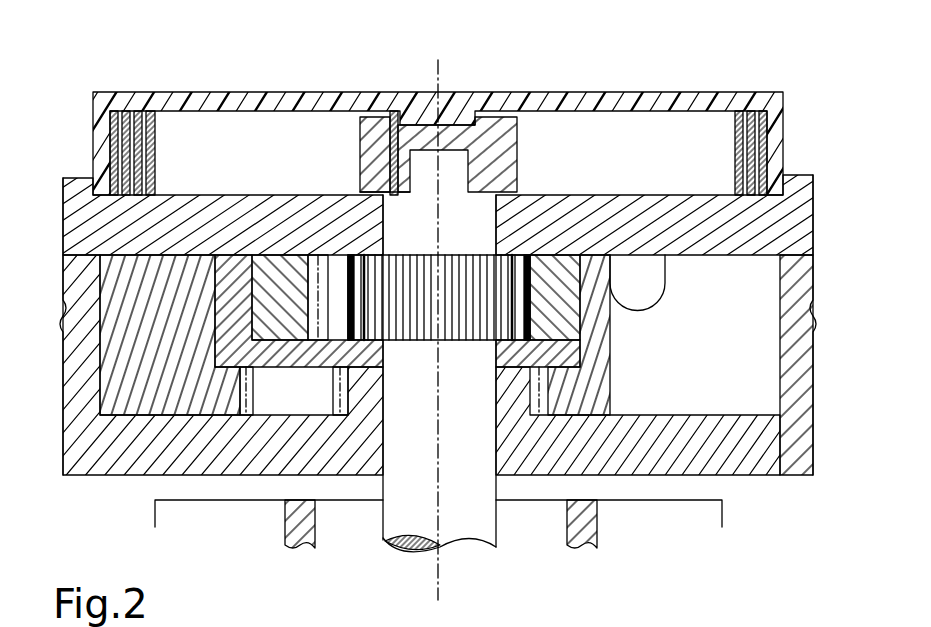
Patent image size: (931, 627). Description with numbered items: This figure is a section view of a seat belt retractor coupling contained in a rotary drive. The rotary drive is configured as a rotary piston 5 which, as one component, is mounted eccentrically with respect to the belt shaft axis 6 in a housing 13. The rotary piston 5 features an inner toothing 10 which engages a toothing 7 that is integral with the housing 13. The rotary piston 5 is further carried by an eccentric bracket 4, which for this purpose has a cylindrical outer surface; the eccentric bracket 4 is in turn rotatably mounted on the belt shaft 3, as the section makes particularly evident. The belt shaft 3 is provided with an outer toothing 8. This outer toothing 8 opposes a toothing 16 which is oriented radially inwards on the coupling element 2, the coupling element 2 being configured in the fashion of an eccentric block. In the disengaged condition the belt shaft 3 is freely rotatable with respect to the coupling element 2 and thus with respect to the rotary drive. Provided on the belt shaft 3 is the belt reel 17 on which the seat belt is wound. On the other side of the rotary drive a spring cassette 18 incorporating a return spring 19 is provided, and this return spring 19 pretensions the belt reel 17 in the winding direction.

The coupling element 2 is at (278, 272).
The belt shaft 3 is at (463, 507).
The eccentric bracket 4 is at (285, 355).
The rotary piston 5 is at (100, 418).
The belt shaft axis 6 is at (437, 565).
The toothing 7 is at (340, 400).
The outer toothing 8 is at (532, 275).
The inner toothing 10 is at (242, 405).
The housing 13 is at (142, 452).
The toothing 16 is at (328, 262).
The belt reel 17 is at (578, 527).
The spring cassette 18 is at (262, 100).
The return spring 19 is at (140, 115).